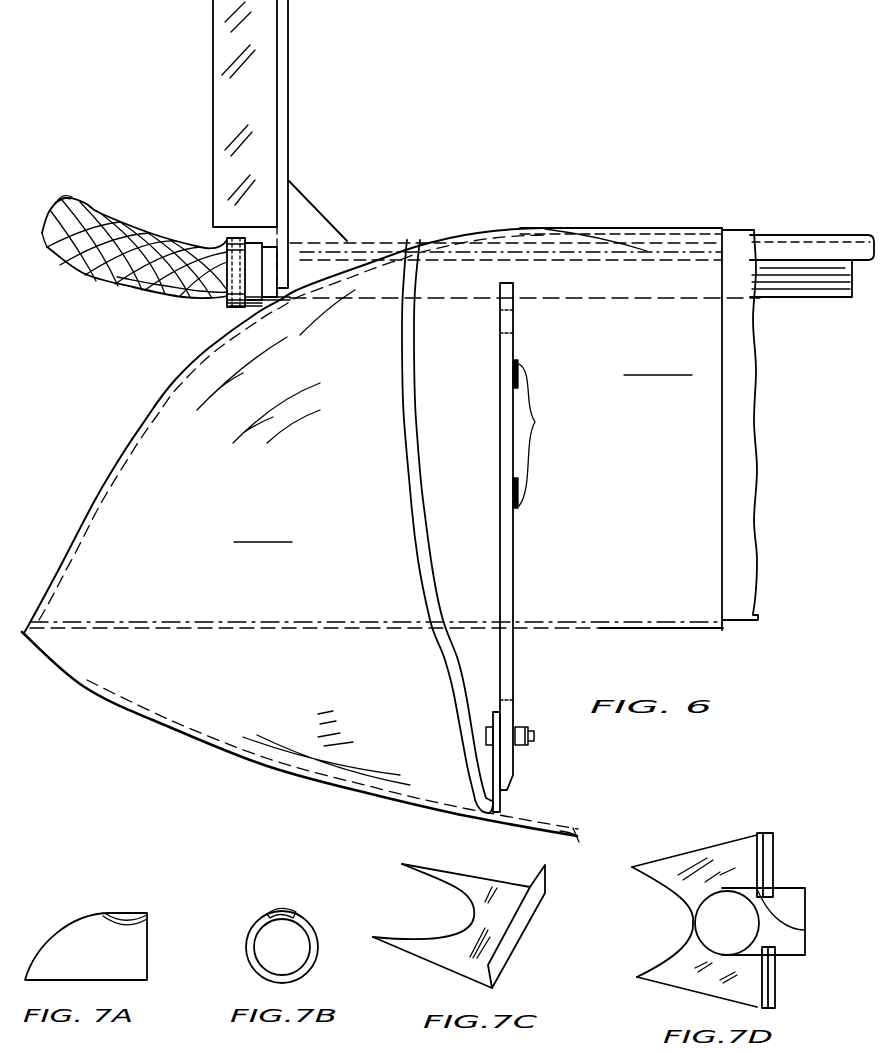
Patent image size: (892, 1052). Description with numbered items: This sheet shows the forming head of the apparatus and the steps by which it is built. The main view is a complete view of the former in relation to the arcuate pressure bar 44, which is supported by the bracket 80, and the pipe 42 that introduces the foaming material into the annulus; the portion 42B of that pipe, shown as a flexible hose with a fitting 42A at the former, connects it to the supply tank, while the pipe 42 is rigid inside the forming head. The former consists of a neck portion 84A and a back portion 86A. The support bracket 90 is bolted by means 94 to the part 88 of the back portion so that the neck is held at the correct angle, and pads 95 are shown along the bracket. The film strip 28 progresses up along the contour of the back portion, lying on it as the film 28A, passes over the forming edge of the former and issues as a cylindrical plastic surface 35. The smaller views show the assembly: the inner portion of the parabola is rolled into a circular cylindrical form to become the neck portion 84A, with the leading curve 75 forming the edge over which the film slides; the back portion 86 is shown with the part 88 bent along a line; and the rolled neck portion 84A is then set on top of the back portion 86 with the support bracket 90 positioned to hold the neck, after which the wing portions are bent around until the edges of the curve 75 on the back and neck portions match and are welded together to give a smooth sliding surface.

In FIG. 6, the film strip 28 is at (530, 824).
In FIG. 6, the film 28A is at (301, 528).
In FIG. 6, the cylinder 35 is at (745, 560).
In FIG. 6, the supply pipe 42 is at (227, 238).
In FIG. 6, the clamp lower portion 42A is at (235, 307).
In FIG. 6, the flexible pipe portion 42B is at (125, 283).
In FIG. 6, the arcuate support bar 44 is at (742, 236).
In FIG. 7C, the forming edge curve 75 is at (437, 937).
In FIG. 7D, the forming edge curve 75 is at (678, 958).
In FIG. 6, the bracket 80 is at (290, 42).
In FIG. 6, the neck portion 84A is at (395, 428).
In FIG. 7A, the neck portion 84A is at (92, 912).
In FIG. 7B, the neck portion 84A is at (287, 909).
In FIG. 7D, the neck portion 84A is at (786, 887).
In FIG. 7C, the back portion 86 is at (468, 873).
In FIG. 7D, the back portion 86 is at (718, 842).
In FIG. 6, the back portion 86A is at (404, 368).
In FIG. 6, the bent part 88 is at (494, 712).
In FIG. 7C, the bent part 88 is at (535, 878).
In FIG. 7D, the bent part 88 is at (757, 865).
In FIG. 6, the support bracket 90 is at (514, 547).
In FIG. 7D, the support bracket 90 is at (777, 979).
In FIG. 6, the bolts 94 is at (531, 727).
In FIG. 6, the pads 95 is at (536, 434).